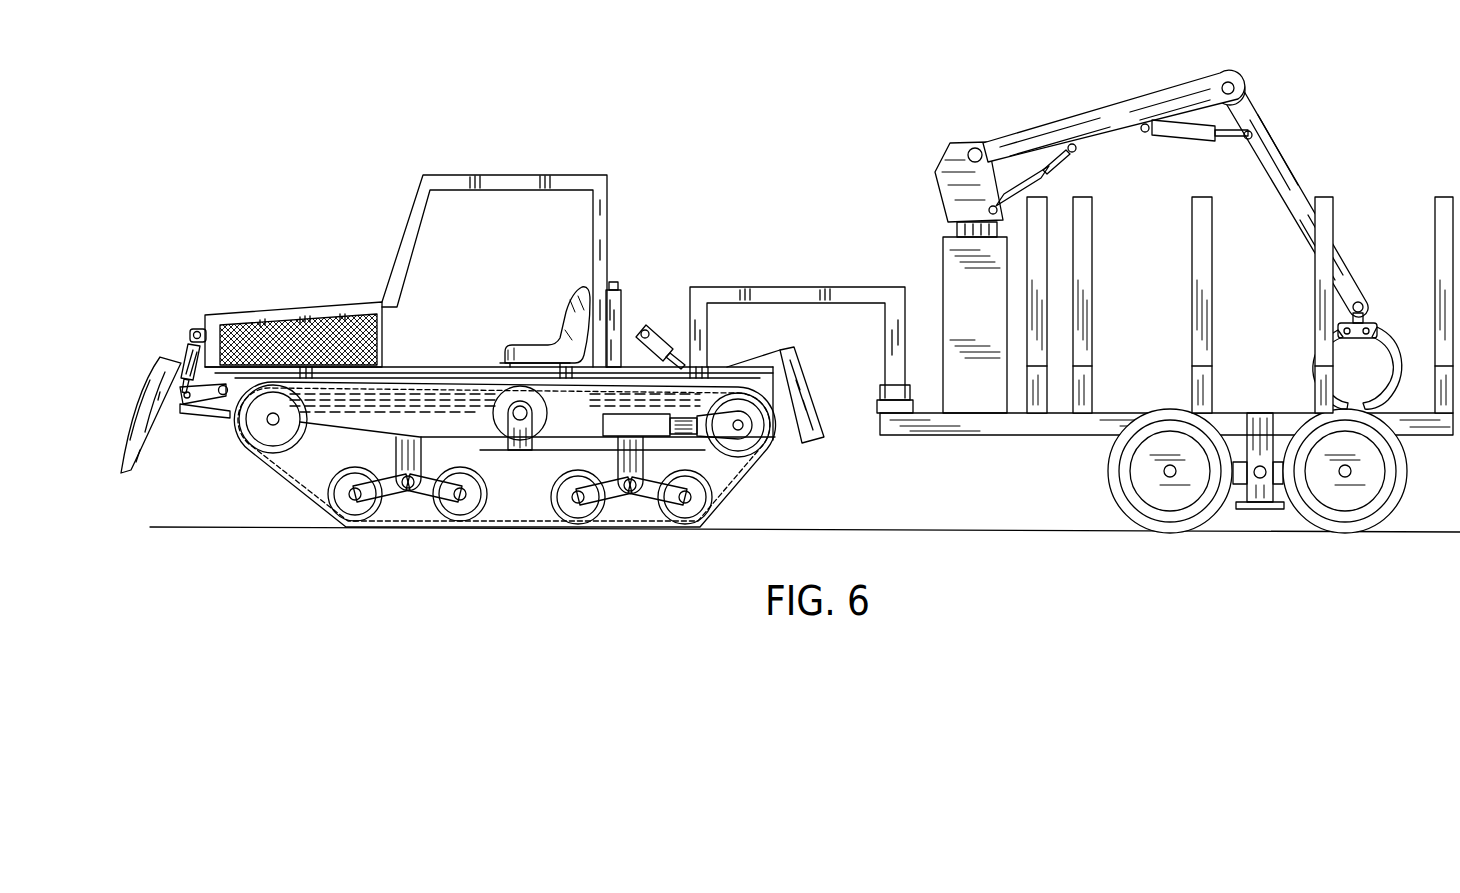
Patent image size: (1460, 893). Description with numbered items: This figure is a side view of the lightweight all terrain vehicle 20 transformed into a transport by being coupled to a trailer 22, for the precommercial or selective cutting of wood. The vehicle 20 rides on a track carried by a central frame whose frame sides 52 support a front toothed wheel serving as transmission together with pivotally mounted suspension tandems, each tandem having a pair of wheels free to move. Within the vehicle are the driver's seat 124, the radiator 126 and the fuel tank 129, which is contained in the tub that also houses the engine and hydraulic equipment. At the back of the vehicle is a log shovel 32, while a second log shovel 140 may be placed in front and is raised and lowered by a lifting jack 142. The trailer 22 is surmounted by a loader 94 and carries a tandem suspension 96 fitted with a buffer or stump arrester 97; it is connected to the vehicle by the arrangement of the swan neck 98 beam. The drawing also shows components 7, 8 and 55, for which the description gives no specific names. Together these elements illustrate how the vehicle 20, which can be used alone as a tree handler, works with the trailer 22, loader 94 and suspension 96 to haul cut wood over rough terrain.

The hitch coupling 7 is at (775, 290).
The trailer axle assembly 8 is at (1262, 498).
The all terrain vehicle 20 is at (513, 180).
The trailer 22 is at (1125, 102).
The log shovel 32 is at (810, 413).
The frame sides 52 is at (482, 437).
The track assembly 55 is at (487, 373).
The loader 94 is at (1055, 130).
The tandem suspension 96 is at (1157, 465).
The buffer or stump arrester 97 is at (1232, 514).
The swan neck beam 98 is at (812, 293).
The driver's seat 124 is at (567, 317).
The fuel tank 129 is at (556, 355).
The radiator 126 is at (610, 313).
The log shovel 140 is at (170, 452).
The lifting jack 142 is at (185, 362).